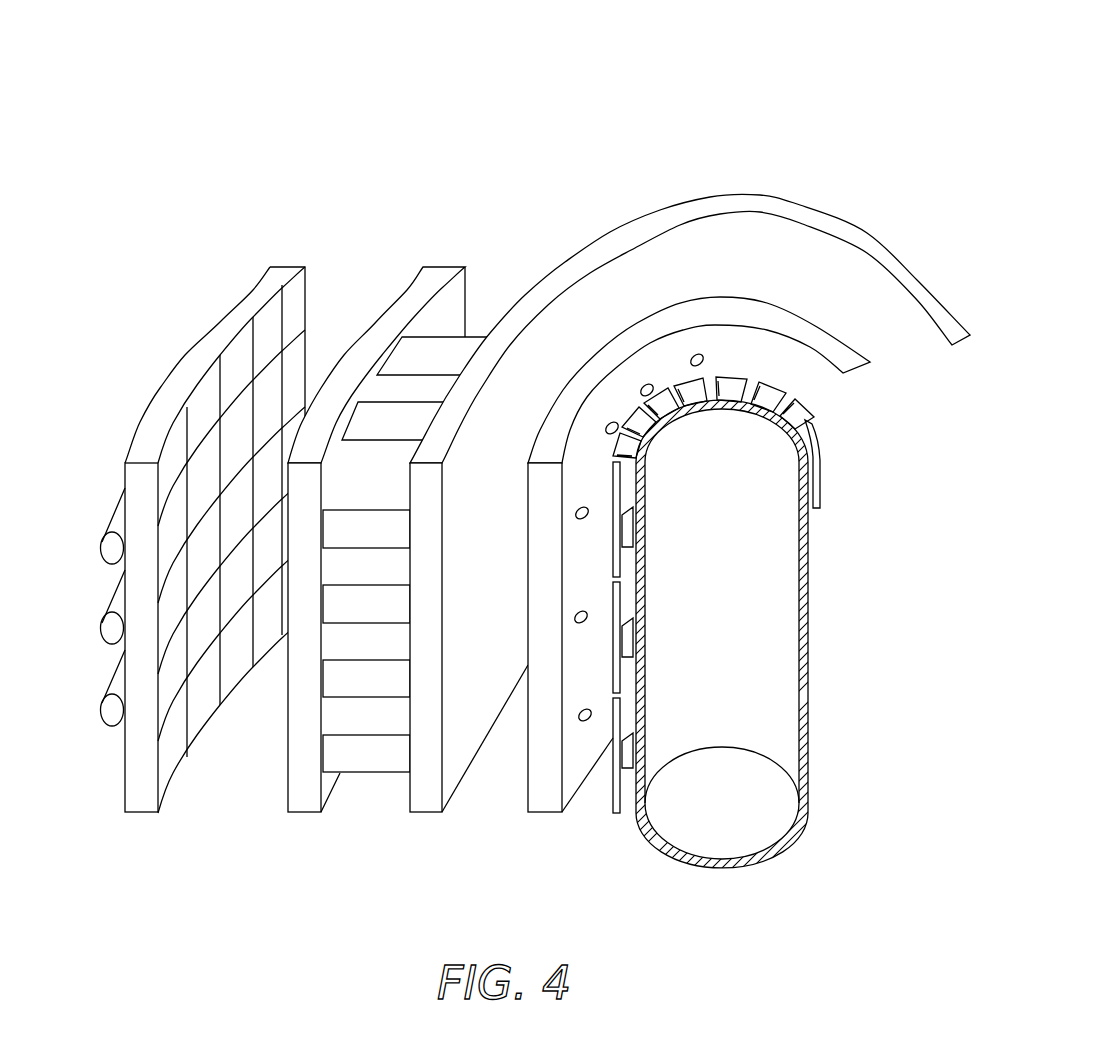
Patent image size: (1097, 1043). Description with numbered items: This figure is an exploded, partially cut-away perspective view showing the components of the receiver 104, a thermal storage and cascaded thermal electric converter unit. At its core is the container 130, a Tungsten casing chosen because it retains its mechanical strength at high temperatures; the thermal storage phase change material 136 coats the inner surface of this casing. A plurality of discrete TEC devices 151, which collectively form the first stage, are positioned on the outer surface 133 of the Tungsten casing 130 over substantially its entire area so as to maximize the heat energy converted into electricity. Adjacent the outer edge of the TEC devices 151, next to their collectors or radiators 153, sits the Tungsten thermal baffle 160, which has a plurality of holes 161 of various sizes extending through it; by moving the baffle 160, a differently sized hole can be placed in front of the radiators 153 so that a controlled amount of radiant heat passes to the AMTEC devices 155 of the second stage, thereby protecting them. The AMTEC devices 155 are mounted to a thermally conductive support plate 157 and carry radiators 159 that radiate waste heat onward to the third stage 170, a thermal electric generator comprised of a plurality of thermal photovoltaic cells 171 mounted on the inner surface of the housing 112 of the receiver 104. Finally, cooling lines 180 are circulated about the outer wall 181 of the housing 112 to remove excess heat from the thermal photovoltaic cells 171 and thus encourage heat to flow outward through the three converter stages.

The receiver 104 is at (608, 118).
The housing 112 is at (210, 499).
The outer wall 181 is at (222, 327).
The third stage 170 is at (197, 428).
The thermal photovoltaic cells 171 is at (202, 475).
The cooling lines 180 is at (112, 630).
The radiators 159 is at (361, 561).
The AMTEC devices 155 is at (350, 752).
The thermally conductive support plate 157 is at (453, 737).
The radiators 153 is at (684, 571).
The thermal baffle 160 is at (585, 392).
The holes 161 is at (576, 506).
The TEC devices 151 is at (700, 587).
The outer surface 133 is at (660, 410).
The container 130 is at (848, 549).
The thermal storage phase change material 136 is at (760, 448).